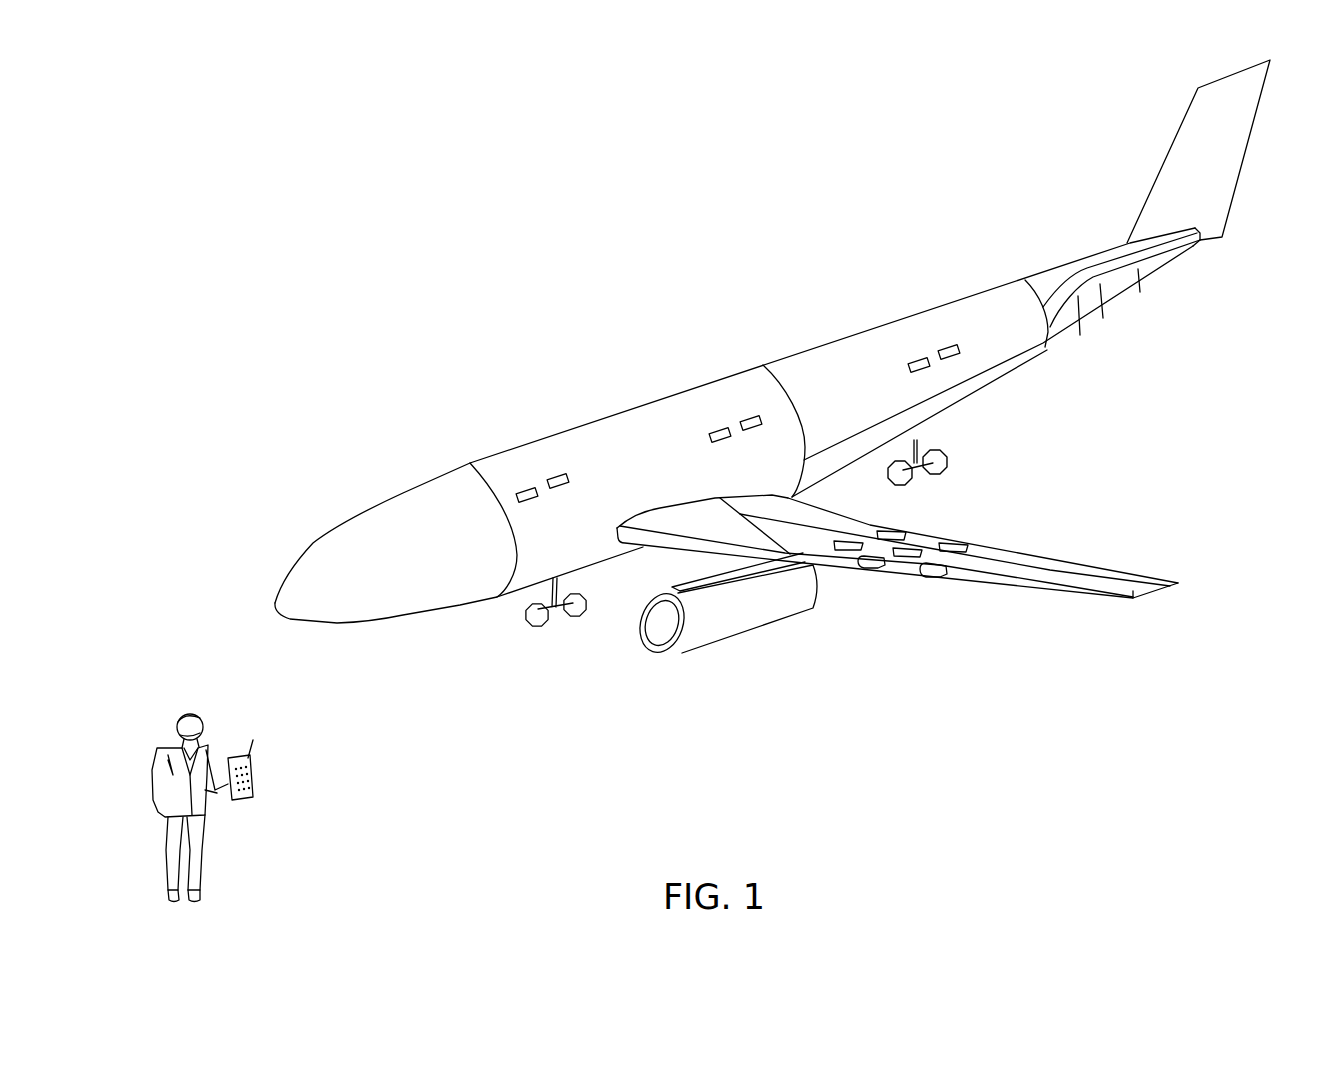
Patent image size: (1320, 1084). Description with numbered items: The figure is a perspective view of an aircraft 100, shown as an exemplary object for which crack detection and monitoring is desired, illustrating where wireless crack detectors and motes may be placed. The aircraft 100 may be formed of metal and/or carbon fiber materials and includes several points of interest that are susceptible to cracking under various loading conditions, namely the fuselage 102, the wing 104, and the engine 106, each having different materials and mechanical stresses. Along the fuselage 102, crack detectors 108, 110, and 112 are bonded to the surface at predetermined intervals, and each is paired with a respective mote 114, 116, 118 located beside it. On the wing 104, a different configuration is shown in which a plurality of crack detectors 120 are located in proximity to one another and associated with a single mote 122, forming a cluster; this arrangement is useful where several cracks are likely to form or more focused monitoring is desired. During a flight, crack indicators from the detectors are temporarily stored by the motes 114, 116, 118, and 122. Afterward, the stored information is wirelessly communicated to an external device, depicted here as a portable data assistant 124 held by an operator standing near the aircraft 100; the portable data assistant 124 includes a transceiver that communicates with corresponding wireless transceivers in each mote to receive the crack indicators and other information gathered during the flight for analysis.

The aircraft 100 is at (258, 249).
The fuselage 102 is at (605, 412).
The wing 104 is at (672, 548).
The engine 106 is at (710, 647).
The crack detector 108 is at (522, 487).
The crack detector 110 is at (715, 427).
The crack detector 112 is at (917, 358).
The mote 114 is at (553, 477).
The mote 116 is at (747, 418).
The mote 118 is at (945, 345).
The plurality of crack detectors 120 is at (847, 551).
The mote 122 is at (906, 558).
The portable data assistant (PDA) 124 is at (255, 775).